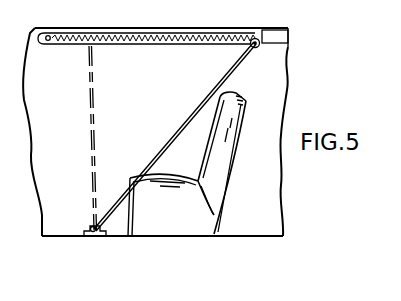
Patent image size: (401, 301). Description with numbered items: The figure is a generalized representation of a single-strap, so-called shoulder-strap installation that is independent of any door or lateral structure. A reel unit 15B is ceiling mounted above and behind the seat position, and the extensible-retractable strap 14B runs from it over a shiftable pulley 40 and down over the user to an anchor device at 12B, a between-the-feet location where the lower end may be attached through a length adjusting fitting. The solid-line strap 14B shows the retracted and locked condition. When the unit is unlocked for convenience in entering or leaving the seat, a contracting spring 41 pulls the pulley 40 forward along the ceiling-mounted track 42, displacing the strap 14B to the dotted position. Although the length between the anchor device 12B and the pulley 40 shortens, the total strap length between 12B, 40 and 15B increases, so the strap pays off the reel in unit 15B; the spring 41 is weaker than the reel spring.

The shiftable pulley 40 is at (262, 28).
The contracting spring 41 is at (162, 45).
The ceiling-mounted track 42 is at (120, 45).
The strap 14B is at (181, 130).
The unit 15B is at (288, 46).
The anchor device 12B is at (90, 238).